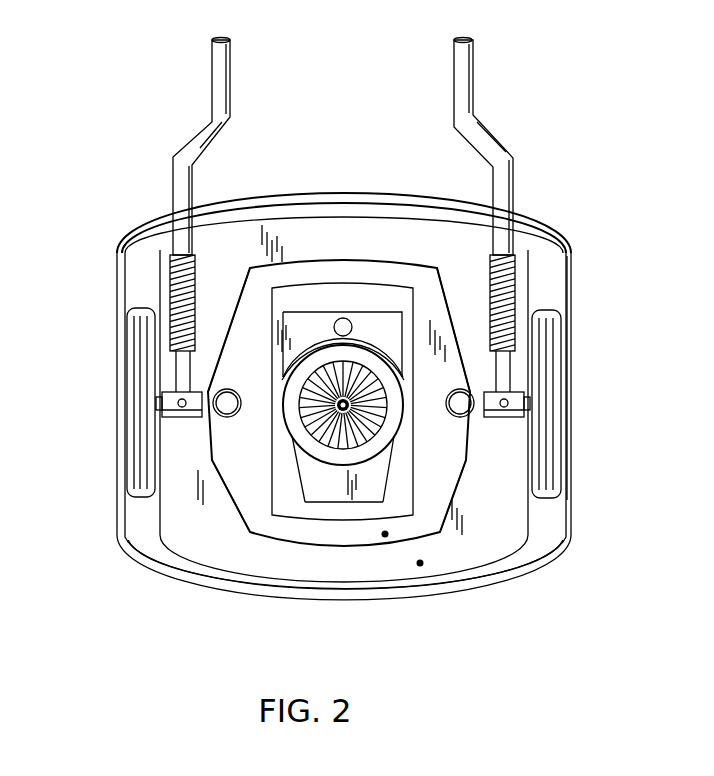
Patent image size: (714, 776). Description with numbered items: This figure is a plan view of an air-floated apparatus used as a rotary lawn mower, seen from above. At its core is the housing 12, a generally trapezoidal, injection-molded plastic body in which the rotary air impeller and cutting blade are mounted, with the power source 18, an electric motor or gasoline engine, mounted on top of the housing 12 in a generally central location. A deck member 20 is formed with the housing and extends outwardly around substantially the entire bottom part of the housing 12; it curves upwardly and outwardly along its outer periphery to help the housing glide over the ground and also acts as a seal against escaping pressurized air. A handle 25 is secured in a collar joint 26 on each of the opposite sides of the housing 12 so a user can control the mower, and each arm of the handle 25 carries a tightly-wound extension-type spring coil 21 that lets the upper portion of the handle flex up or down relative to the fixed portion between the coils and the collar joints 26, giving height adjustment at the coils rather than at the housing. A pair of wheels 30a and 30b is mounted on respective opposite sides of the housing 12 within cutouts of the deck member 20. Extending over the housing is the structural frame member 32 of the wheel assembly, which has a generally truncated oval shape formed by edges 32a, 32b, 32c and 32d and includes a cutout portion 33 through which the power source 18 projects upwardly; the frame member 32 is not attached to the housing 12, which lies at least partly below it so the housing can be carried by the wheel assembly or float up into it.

The housing 12 is at (420, 563).
The power source 18 is at (328, 463).
The deck member 20 is at (572, 500).
The spring coil 21 is at (515, 258).
The handle 25 is at (470, 88).
The collar joint 26 is at (508, 418).
The wheel 30a is at (562, 423).
The wheel 30b is at (125, 442).
The structural frame member 32 is at (385, 534).
The edge 32a is at (237, 512).
The edge 32b is at (243, 287).
The edge 32c is at (462, 285).
The edge 32d is at (561, 548).
The cutout portion 33 is at (335, 275).